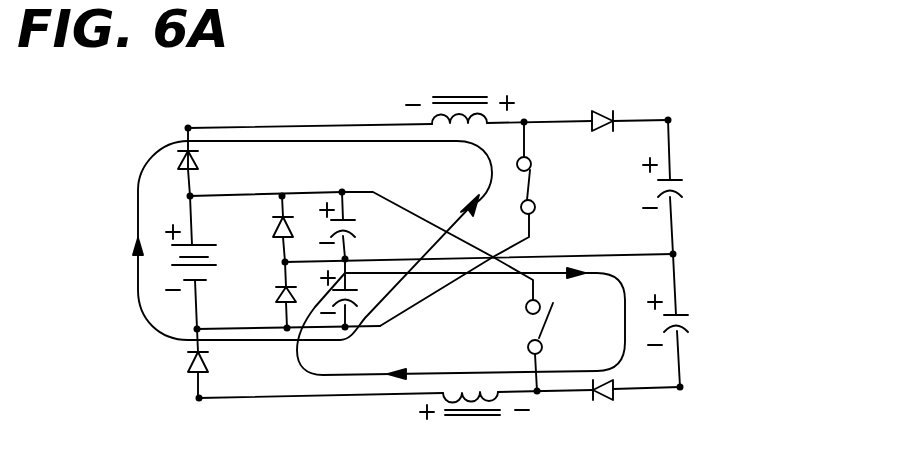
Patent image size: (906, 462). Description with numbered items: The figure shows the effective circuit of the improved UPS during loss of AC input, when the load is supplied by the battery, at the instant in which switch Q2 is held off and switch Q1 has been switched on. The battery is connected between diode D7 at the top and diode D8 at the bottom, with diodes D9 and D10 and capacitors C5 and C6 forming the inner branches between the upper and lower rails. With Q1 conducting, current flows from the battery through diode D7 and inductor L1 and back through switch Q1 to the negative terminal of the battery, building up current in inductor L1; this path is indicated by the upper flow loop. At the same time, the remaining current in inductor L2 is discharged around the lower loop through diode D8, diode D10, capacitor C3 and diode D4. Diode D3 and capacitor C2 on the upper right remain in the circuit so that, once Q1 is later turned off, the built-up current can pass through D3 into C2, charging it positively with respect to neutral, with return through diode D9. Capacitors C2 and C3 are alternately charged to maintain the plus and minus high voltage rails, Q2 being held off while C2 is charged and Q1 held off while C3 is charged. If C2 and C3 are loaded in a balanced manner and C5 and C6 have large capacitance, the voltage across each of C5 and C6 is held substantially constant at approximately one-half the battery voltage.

The inductor L1 is at (460, 98).
The inductor L2 is at (474, 418).
The diode D3 is at (600, 106).
The diode D4 is at (605, 405).
The diode D7 is at (207, 160).
The diode D8 is at (218, 362).
The diode D9 is at (264, 229).
The diode D10 is at (261, 297).
The capacitor C2 is at (681, 183).
The capacitor C3 is at (685, 320).
The capacitor C5 is at (356, 223).
The capacitor C6 is at (357, 292).
The switch Q1 is at (545, 185).
The switch Q2 is at (555, 327).